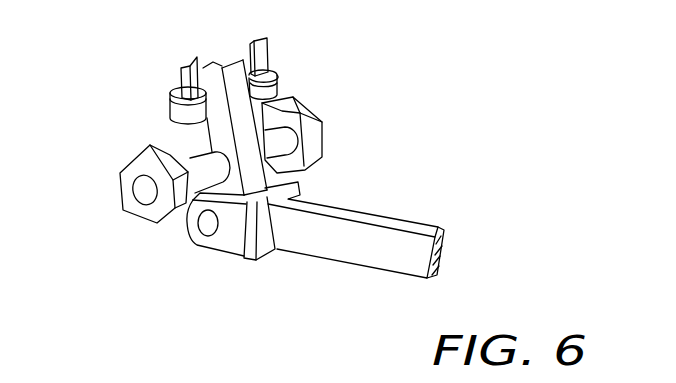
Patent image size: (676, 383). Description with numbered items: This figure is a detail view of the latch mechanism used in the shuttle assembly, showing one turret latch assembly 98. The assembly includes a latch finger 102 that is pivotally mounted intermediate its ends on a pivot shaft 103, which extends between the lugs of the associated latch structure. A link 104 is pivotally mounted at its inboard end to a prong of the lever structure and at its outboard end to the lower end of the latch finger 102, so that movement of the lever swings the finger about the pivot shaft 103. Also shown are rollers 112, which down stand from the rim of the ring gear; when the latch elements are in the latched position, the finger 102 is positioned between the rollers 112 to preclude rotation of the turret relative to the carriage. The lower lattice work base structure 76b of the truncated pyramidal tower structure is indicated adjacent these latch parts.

The latch finger 102 is at (203, 130).
The rollers 112 is at (188, 73).
The lower lattice work base structure 76b is at (284, 99).
The pivot shaft 103 is at (143, 205).
The link 104 is at (316, 260).
The turret latch assembly 98 is at (368, 207).